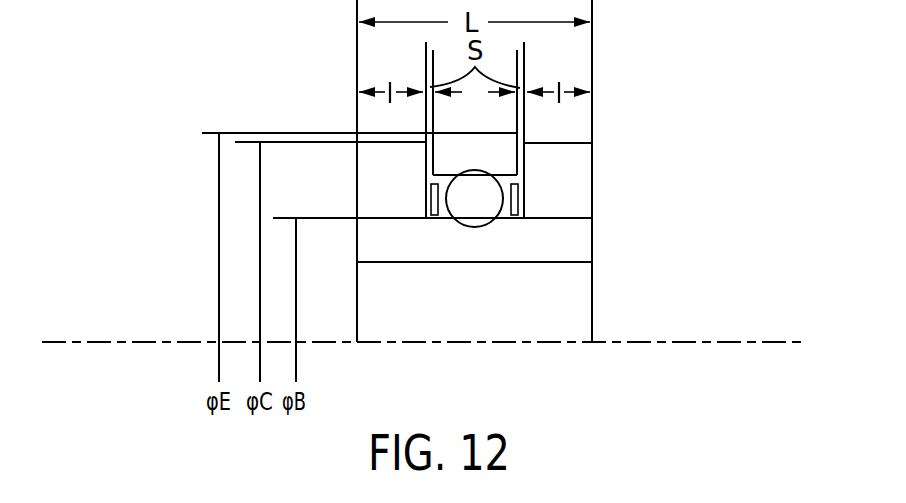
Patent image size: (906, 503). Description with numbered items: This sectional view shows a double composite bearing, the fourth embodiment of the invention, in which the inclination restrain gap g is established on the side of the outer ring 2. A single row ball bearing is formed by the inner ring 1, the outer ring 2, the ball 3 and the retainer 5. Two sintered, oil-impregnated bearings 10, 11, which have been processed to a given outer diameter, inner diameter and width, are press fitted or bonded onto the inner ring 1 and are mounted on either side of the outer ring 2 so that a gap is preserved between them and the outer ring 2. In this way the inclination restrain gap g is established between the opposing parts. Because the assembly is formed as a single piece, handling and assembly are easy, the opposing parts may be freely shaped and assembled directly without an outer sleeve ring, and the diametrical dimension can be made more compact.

The inner ring 1 is at (577, 245).
The outer ring 2 is at (499, 146).
The ball 3 is at (470, 222).
The retainer 5 is at (510, 220).
The sintered, oil-impregnated bearing 10 is at (370, 201).
The sintered, oil-impregnated bearing 11 is at (578, 172).
The inclination restrain gap g is at (278, 135).